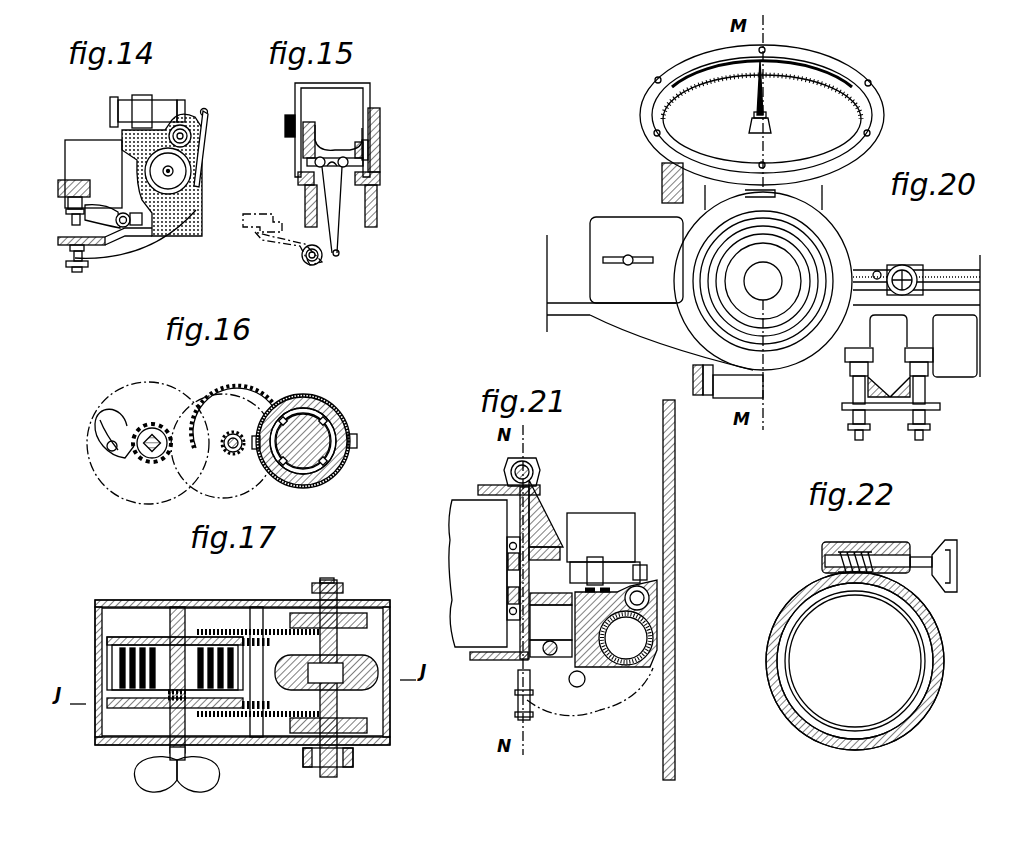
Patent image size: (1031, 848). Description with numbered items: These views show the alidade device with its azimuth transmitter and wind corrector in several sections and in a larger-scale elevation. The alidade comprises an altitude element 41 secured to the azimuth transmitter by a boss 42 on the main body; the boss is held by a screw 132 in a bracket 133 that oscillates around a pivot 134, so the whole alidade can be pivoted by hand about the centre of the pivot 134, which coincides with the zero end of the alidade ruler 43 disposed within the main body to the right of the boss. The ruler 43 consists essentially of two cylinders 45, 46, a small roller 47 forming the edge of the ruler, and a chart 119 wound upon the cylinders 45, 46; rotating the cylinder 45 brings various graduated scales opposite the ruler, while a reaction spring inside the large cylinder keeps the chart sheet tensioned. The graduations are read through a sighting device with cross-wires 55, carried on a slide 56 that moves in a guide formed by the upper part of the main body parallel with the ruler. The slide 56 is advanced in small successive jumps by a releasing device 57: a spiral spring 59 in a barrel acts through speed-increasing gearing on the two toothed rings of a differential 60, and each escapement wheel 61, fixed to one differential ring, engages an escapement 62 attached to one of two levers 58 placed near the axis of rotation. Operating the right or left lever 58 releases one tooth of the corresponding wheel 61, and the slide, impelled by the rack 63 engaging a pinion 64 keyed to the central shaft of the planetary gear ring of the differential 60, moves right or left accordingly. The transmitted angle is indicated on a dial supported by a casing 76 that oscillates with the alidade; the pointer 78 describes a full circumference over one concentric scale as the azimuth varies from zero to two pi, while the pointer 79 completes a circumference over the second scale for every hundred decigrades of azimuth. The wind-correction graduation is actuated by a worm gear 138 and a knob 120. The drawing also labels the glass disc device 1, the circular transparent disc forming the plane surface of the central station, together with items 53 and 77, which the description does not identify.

In FIG. 21, the glass disc device 1 is at (671, 681).
In FIG. 21, the altitude element 41 is at (588, 672).
In FIG. 20, the altitude element 41 is at (923, 346).
In FIG. 14, the boss 42 is at (96, 152).
In FIG. 21, the boss 42 is at (551, 622).
In FIG. 14, the alidade ruler 43 is at (194, 190).
In FIG. 21, the alidade ruler 43 is at (658, 627).
In FIG. 14, the cylinder 45 is at (191, 150).
In FIG. 14, the cylinder 46 is at (190, 213).
In FIG. 14, the small roller 47 is at (208, 115).
In FIG. 14, the solenoid coil 53 is at (122, 108).
In FIG. 21, the solenoid coil 53 is at (583, 562).
In FIG. 20, the cross-wires 55 is at (912, 268).
In FIG. 14, the slide 56 is at (139, 126).
In FIG. 21, the slide 56 is at (604, 564).
In FIG. 17, the releasing device 57 is at (378, 603).
In FIG. 21, the releasing device 57 is at (605, 522).
In FIG. 14, the levers 58 is at (125, 214).
In FIG. 15, the levers 58 is at (257, 218).
In FIG. 20, the levers 58 is at (868, 392).
In FIG. 17, the spiral spring 59 is at (125, 655).
In FIG. 16, the differential 60 is at (340, 471).
In FIG. 17, the differential 60 is at (296, 668).
In FIG. 15, the escapement wheels 61 is at (309, 124).
In FIG. 17, the escapement wheels 61 is at (368, 621).
In FIG. 15, the escapement 62 is at (361, 145).
In FIG. 15, the rack 63 is at (368, 148).
In FIG. 21, the rack 63 is at (648, 568).
In FIG. 20, the rack 63 is at (858, 272).
In FIG. 15, the pinion 64 is at (380, 122).
In FIG. 17, the pinion 64 is at (334, 583).
In FIG. 21, the casing 76 is at (488, 659).
In FIG. 20, the casing 76 is at (830, 232).
In FIG. 22, the casing 76 is at (776, 637).
In FIG. 20, the dial 77 is at (840, 113).
In FIG. 20, the pointer 78 is at (768, 120).
In FIG. 20, the pointer 79 is at (764, 100).
In FIG. 14, the chart 119 is at (205, 160).
In FIG. 22, the knob 120 is at (946, 545).
In FIG. 21, the screw 132 is at (543, 680).
In FIG. 21, the bracket 133 is at (534, 508).
In FIG. 21, the pivot 134 is at (518, 579).
In FIG. 21, the worm gear 138 is at (540, 468).
In FIG. 22, the worm gear 138 is at (862, 550).